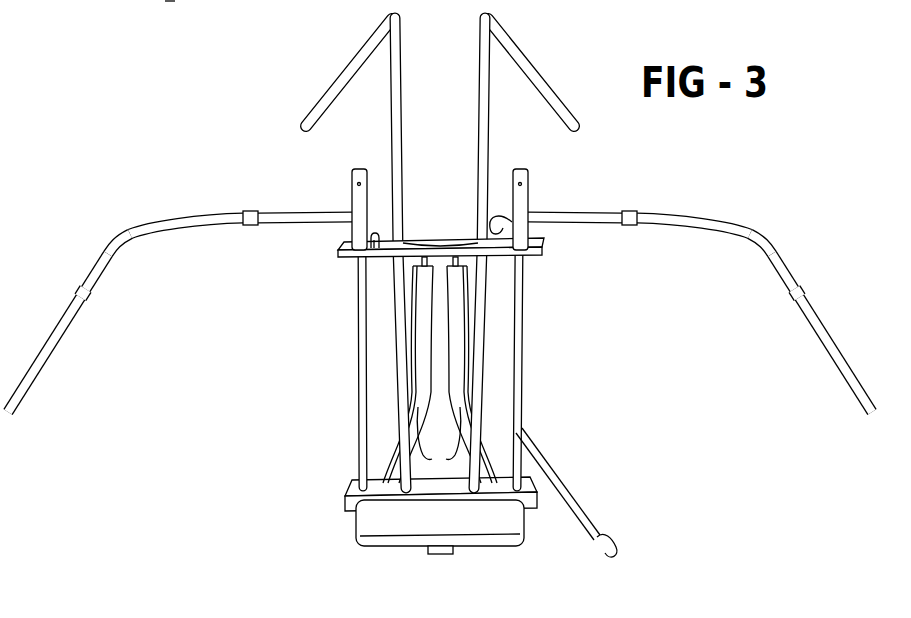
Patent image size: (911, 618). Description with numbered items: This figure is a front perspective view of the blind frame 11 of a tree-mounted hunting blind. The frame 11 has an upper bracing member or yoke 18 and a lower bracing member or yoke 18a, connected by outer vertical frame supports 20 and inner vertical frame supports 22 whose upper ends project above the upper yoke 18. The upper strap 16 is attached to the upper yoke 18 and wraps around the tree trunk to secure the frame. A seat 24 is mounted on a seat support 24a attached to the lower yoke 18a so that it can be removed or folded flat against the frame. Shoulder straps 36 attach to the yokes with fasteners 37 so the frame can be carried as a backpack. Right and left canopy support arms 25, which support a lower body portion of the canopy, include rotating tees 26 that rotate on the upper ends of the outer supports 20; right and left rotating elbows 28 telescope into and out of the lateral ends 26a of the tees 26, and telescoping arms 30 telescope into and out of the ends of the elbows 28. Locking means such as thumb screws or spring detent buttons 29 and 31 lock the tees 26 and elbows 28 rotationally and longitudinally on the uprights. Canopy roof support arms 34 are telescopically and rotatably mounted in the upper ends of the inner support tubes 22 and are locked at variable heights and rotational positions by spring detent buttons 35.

The frame 11 is at (290, 157).
The upper strap 16 is at (597, 533).
The upper bracing member or yoke 18 is at (541, 247).
The lower bracing member or yoke 18a is at (528, 496).
The outer vertical frame supports 20 is at (358, 353).
The inner vertical frame supports 22 is at (401, 396).
The seat 24 is at (388, 528).
The seat support 24a is at (446, 553).
The canopy support arms 25 is at (115, 229).
The rotating tees 26 is at (350, 213).
The lateral ends of rotating tees 26a is at (272, 230).
The rotating elbows 28 is at (166, 221).
The locking means 29 is at (247, 212).
The telescoping arms 30 is at (56, 338).
The locking means 31 is at (79, 286).
The canopy roof support arms 34 is at (486, 16).
The spring detent buttons 35 is at (464, 212).
The shoulder straps 36 is at (455, 456).
The fasteners 37 is at (172, 0).